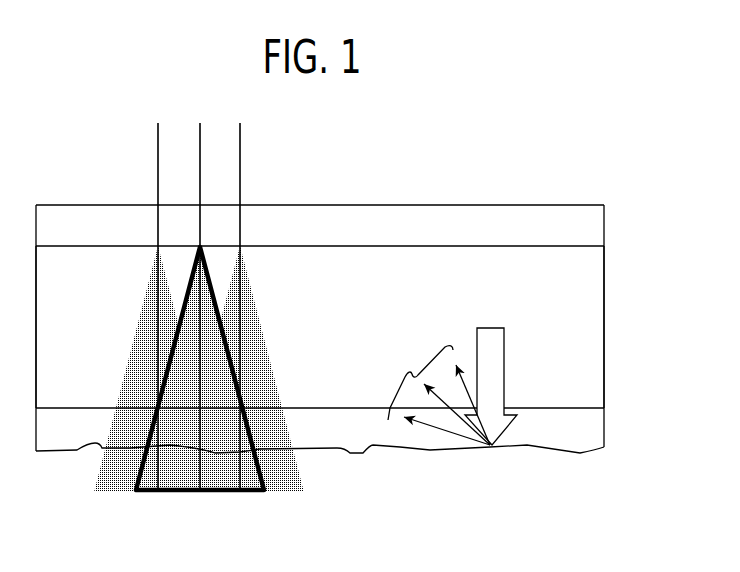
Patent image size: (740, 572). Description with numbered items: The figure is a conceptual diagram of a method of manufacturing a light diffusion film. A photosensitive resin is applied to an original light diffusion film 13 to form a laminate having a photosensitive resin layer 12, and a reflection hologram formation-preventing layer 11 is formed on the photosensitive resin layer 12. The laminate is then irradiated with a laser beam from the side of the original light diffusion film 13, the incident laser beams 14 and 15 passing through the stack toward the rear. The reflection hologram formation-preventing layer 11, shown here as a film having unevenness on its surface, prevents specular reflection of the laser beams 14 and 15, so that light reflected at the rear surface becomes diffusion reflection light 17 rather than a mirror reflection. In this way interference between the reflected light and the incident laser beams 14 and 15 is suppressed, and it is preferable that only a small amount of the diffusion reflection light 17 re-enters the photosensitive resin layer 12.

The reflection hologram formation-preventing layer 11 is at (580, 435).
The photosensitive resin layer 12 is at (592, 320).
The original light diffusion film 13 is at (588, 235).
The laser beam 14 is at (202, 478).
The laser beam 15 is at (263, 478).
The diffusion reflection light 17 is at (402, 367).